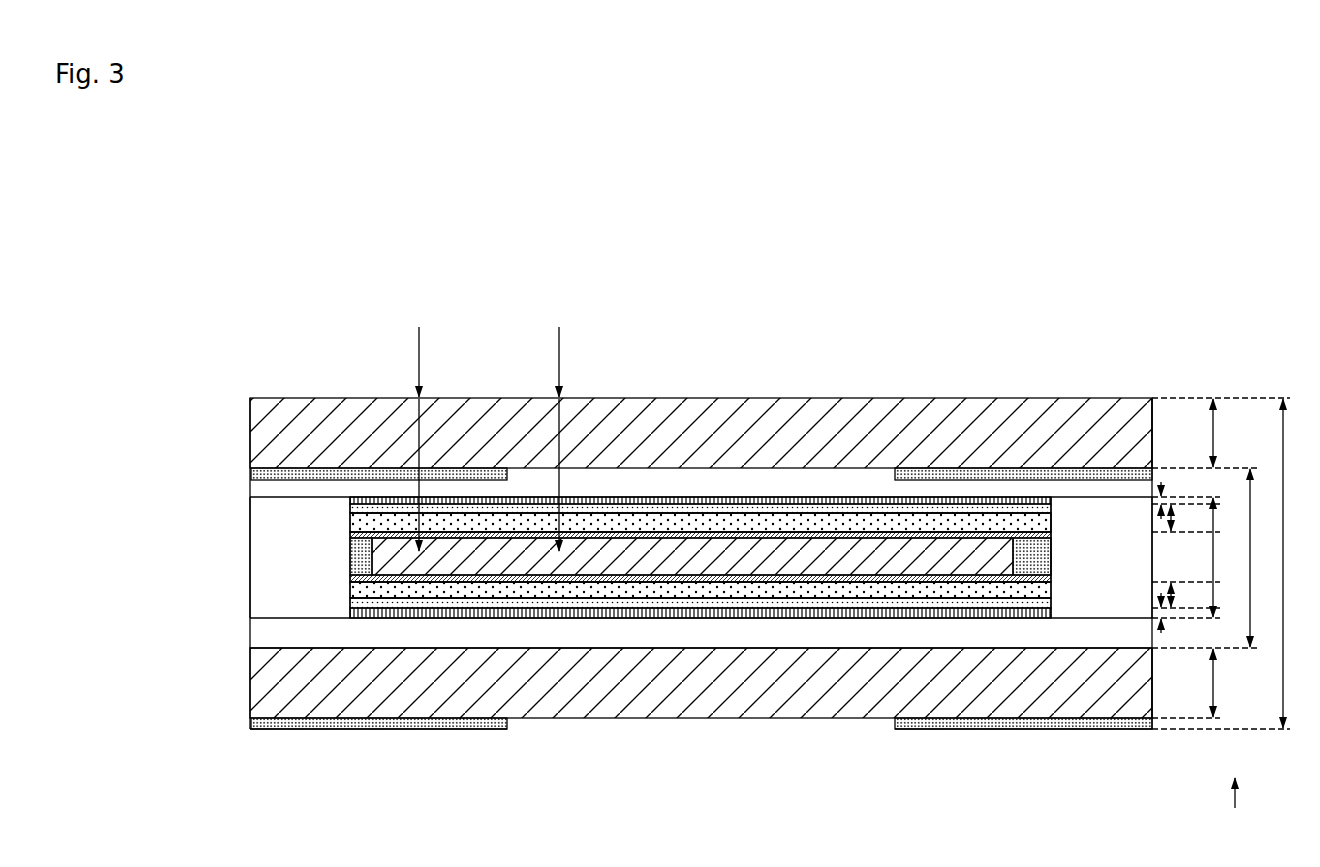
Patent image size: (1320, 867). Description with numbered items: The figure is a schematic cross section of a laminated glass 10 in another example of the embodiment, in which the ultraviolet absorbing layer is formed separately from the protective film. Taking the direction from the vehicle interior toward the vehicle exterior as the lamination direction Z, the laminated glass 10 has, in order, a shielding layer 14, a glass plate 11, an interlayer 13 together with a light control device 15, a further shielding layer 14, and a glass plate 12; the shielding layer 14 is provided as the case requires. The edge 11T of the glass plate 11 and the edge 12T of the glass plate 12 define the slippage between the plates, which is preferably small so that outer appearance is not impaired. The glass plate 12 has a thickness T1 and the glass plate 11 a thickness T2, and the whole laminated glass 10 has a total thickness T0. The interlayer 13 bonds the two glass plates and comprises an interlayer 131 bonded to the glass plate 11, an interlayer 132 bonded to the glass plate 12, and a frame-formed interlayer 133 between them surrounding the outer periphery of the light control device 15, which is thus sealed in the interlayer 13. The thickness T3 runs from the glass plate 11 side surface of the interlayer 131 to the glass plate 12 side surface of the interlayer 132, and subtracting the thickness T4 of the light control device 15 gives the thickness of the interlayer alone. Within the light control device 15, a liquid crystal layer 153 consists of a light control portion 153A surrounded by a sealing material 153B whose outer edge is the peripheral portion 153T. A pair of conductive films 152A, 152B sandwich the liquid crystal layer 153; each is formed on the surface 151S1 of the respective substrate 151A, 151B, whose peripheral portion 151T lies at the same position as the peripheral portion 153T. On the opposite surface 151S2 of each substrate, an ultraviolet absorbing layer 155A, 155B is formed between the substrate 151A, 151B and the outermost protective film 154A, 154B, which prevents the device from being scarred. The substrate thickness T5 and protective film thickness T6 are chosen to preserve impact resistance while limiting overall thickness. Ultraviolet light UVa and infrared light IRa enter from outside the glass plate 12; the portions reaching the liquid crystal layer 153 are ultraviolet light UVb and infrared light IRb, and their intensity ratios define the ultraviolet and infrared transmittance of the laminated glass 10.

The laminated glass 10 is at (1055, 305).
The glass plate 11 is at (262, 679).
The edge of glass plate 11T is at (1153, 683).
The glass plate 12 is at (262, 438).
The edge of glass plate 12T is at (1153, 447).
The interlayer 13 is at (640, 569).
The interlayer 131 is at (293, 634).
The interlayer 132 is at (262, 493).
The frame-formed interlayer 133 is at (266, 535).
The shielding layer 14 is at (262, 475).
The light control device 15 is at (695, 580).
The substrate 151A is at (528, 593).
The substrate 151B is at (627, 513).
The surface of substrate 151S1 is at (815, 533).
The surface of substrate 151S2 is at (927, 512).
The peripheral portion of substrate 151T is at (1053, 518).
The conductive film 152A is at (610, 583).
The conductive film 152B is at (703, 531).
The liquid crystal layer 153 is at (687, 691).
The light control portion 153A is at (430, 560).
The sealing material 153B is at (367, 561).
The peripheral portion of liquid crystal layer 153T is at (1052, 563).
The protective film 154A is at (683, 620).
The protective film 154B is at (794, 496).
The ultraviolet absorbing layer 155A is at (748, 609).
The ultraviolet absorbing layer 155B is at (870, 504).
The infrared light IRa is at (421, 343).
The infrared light IRb is at (385, 397).
The ultraviolet light UVa is at (561, 343).
The ultraviolet light UVb is at (545, 517).
The total thickness T0 is at (1297, 563).
The thickness of glass plate T1 is at (1227, 433).
The thickness of glass plate T2 is at (1227, 683).
The thickness T3 is at (1263, 558).
The thickness of light control device T4 is at (1226, 557).
The thickness of substrate T5 is at (1186, 556).
The thickness of protective film T6 is at (1163, 501).